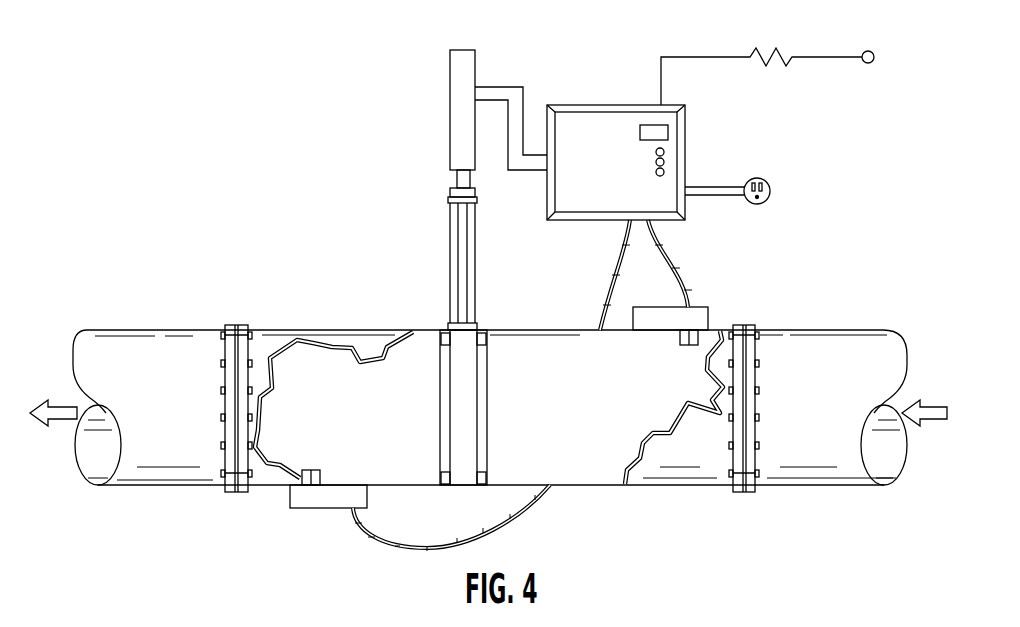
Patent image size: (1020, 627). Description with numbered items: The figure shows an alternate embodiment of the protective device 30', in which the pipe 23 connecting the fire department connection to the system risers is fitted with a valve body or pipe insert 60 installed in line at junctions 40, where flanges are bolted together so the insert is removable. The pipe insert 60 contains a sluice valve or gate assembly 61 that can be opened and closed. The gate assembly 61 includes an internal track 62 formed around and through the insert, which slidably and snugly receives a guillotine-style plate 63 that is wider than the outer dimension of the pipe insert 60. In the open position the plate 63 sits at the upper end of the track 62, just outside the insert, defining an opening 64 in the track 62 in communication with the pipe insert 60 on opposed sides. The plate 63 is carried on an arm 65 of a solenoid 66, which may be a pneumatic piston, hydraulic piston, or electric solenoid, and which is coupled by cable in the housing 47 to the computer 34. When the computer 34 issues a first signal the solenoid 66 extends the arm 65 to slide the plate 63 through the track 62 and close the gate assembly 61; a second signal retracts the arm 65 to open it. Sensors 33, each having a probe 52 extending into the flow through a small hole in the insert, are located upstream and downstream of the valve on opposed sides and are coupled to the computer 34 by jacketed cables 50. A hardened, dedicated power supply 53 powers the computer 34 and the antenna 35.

The device 30' is at (488, 324).
The pipe 23 is at (147, 330).
The junctions 40 is at (223, 490).
The pipe insert 60 is at (282, 327).
The probe 52 is at (320, 471).
The sensor 33 is at (315, 510).
The jacketed cables 50 is at (662, 253).
The gate assembly 61 is at (447, 267).
The track 62 is at (487, 422).
The plate 63 is at (475, 277).
The opening 64 is at (462, 385).
The arm 65 is at (457, 180).
The solenoid 66 is at (450, 122).
The housing 47 is at (490, 87).
The computer 34 is at (685, 140).
The antenna 35 is at (813, 57).
The power supply 53 is at (770, 191).